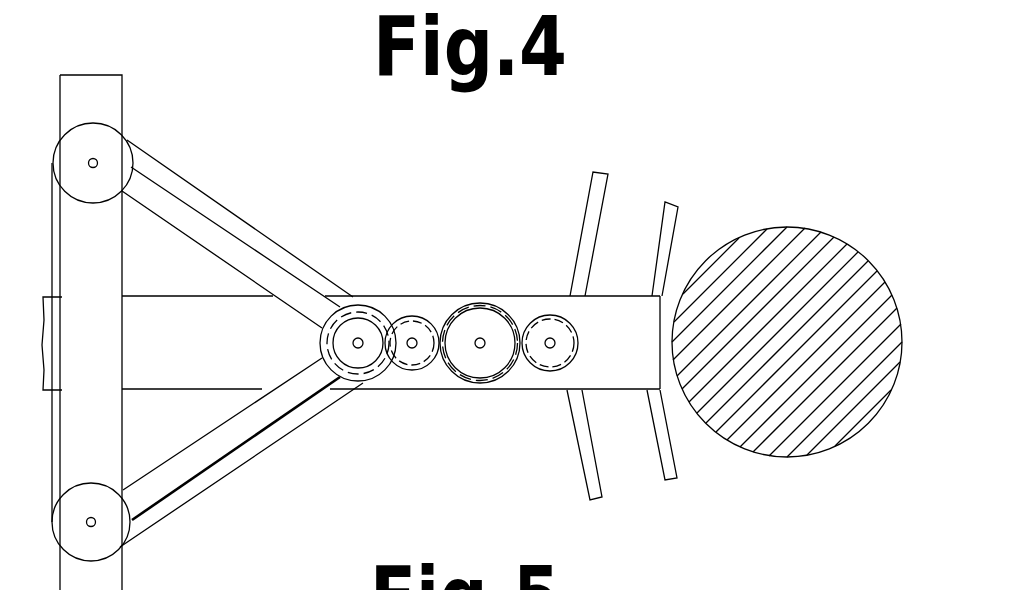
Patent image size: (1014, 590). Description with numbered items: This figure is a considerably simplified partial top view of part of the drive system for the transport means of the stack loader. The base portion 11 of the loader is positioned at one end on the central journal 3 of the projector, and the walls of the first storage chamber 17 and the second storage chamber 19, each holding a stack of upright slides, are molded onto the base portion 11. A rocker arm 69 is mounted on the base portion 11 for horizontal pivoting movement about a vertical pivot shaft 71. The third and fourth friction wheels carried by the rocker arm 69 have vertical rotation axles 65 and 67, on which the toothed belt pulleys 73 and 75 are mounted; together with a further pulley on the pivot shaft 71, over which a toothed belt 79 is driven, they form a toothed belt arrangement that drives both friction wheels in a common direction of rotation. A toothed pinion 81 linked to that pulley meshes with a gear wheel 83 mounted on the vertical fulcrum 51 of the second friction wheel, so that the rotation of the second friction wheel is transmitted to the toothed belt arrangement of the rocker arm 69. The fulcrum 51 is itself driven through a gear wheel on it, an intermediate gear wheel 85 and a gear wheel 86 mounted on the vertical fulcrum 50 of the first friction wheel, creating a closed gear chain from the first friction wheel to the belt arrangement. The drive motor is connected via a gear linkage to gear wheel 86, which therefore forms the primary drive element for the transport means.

The journal 3 is at (765, 225).
The base portion 11 is at (550, 338).
The first storage chamber 17 is at (588, 193).
The second storage chamber 19 is at (585, 460).
The vertical fulcrum 50 is at (530, 302).
The vertical fulcrum 51 is at (411, 338).
The vertical rotation axle 65 is at (95, 158).
The vertical rotation axle 67 is at (97, 522).
The rocker arm 69 is at (87, 447).
The vertical pivot shaft 71 is at (358, 338).
The toothed belt pulley 73 is at (110, 150).
The toothed belt pulley 75 is at (97, 545).
The toothed belt 79 is at (232, 207).
The toothed pinion 81 is at (358, 365).
The gear wheel 83 is at (413, 370).
The intermediate gear wheel 85 is at (469, 305).
The gear wheel 86 is at (545, 357).